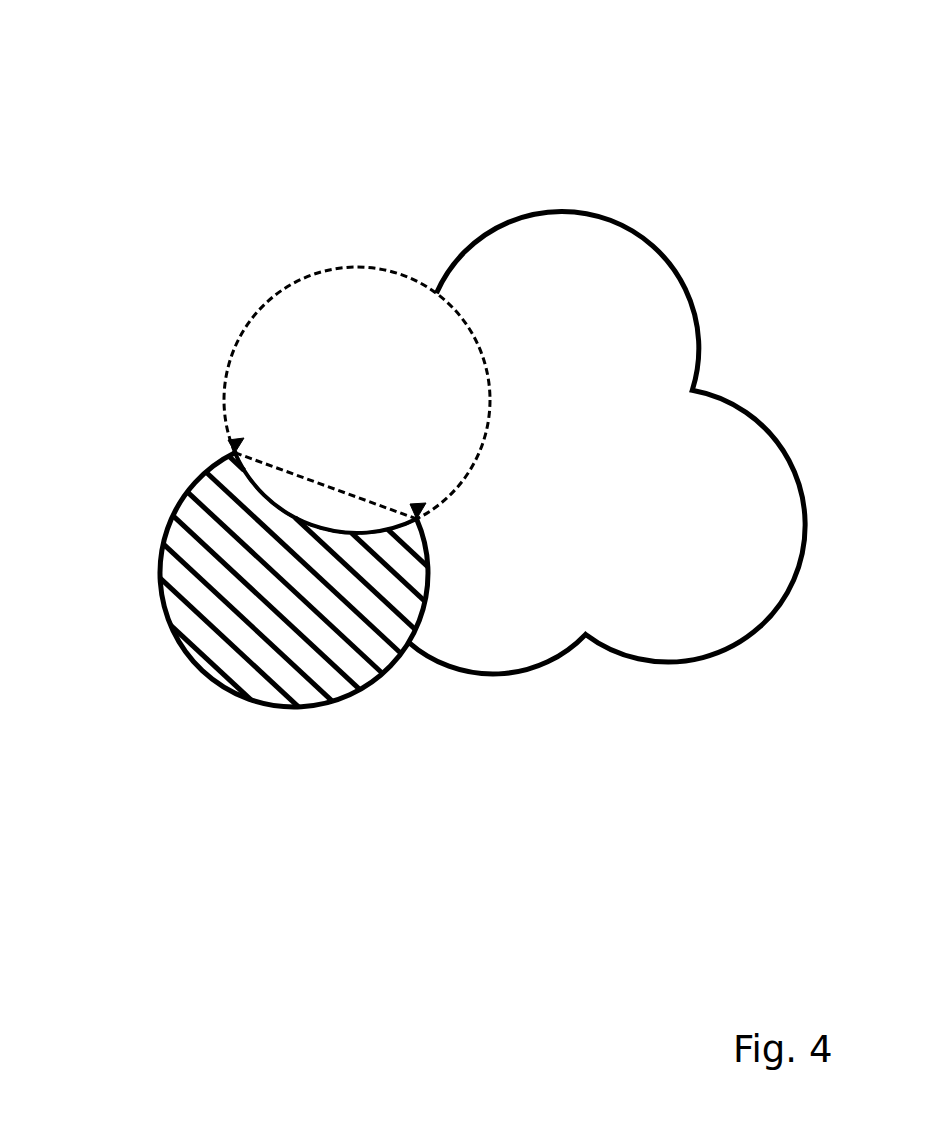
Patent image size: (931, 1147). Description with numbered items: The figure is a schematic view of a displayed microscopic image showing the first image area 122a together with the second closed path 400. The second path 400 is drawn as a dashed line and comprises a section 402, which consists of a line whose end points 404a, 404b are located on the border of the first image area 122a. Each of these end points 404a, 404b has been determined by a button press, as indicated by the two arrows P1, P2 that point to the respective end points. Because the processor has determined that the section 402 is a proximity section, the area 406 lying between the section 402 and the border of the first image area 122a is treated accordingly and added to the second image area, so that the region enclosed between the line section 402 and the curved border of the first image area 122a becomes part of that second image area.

The second closed path 400 is at (370, 267).
The section 402 is at (323, 482).
The end point 404a is at (234, 453).
The end point 404b is at (421, 521).
The area 406 is at (303, 498).
The first image area 122a is at (325, 703).
The arrow P1 is at (235, 451).
The arrow P2 is at (421, 517).